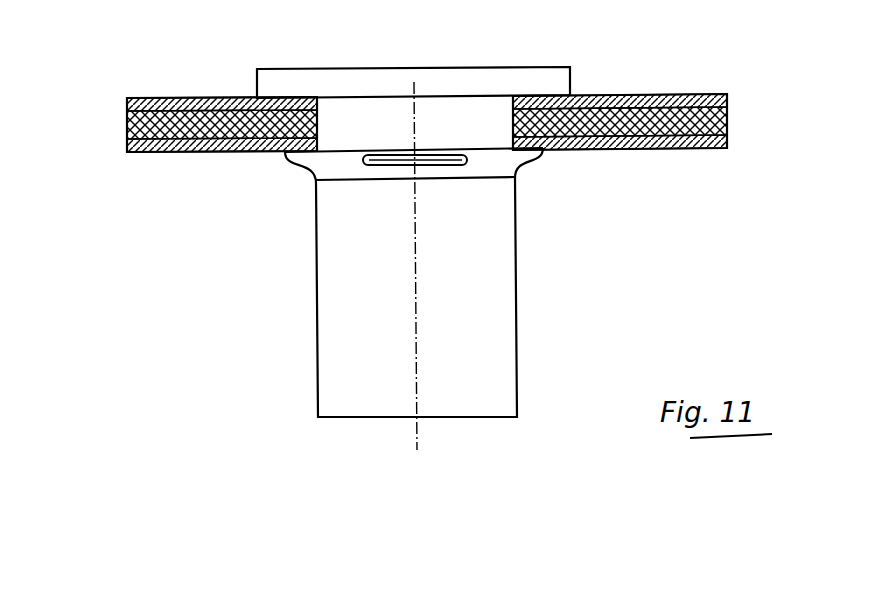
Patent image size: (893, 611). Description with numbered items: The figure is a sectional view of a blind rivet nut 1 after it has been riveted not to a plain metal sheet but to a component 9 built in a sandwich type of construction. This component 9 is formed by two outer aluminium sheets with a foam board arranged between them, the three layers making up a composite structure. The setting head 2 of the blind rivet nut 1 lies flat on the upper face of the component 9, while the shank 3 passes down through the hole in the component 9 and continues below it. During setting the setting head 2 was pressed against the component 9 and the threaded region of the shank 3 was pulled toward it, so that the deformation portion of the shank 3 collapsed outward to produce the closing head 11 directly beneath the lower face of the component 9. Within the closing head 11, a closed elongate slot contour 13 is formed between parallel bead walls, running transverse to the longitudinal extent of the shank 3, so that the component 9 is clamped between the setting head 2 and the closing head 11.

The blind rivet nut 1 is at (286, 312).
The setting head 2 is at (492, 78).
The shank 3 is at (507, 313).
The component 9 is at (100, 148).
The closing head 11 is at (307, 162).
The slot contour 13 is at (383, 160).